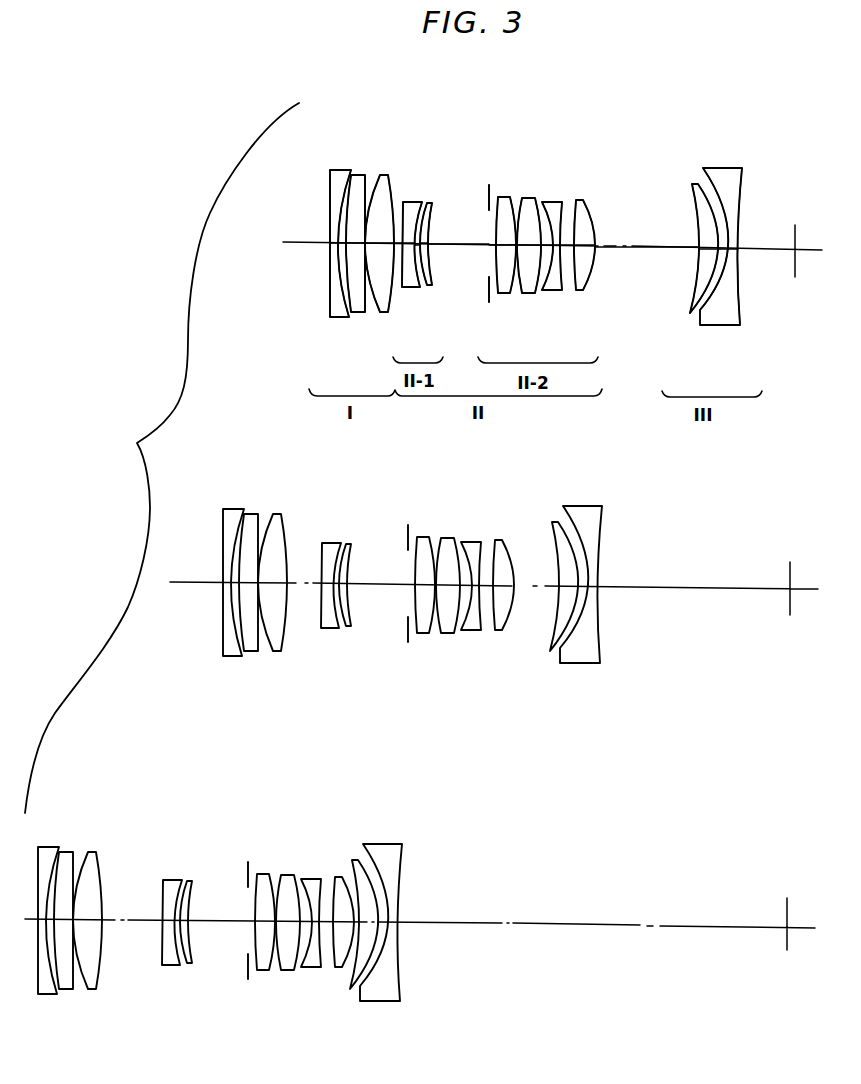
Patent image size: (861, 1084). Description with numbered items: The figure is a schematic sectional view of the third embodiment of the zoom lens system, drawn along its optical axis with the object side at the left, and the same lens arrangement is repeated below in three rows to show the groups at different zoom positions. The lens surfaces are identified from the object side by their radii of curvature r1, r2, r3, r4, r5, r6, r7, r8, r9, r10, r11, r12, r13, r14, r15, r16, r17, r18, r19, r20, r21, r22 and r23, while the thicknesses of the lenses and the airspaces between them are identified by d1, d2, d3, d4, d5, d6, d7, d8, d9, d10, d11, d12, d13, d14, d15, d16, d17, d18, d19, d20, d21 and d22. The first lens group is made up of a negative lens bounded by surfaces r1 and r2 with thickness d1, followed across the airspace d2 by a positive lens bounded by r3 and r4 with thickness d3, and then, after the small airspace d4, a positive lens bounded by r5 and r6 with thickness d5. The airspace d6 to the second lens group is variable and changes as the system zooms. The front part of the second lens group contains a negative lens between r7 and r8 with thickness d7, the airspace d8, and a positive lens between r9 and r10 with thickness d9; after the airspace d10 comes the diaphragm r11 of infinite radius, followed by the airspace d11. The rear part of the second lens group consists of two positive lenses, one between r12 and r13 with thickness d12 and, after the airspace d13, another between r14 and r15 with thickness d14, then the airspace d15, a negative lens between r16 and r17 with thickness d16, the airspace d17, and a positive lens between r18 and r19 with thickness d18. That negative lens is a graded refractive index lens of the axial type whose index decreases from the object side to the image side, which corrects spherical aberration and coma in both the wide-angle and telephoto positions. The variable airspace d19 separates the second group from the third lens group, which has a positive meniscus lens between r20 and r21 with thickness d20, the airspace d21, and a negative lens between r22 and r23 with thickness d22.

The lens surface radius of curvature r1 is at (333, 182).
The lens surface radius of curvature r2 is at (344, 186).
The lens surface radius of curvature r3 is at (351, 190).
The lens surface radius of curvature r4 is at (364, 178).
The lens surface radius of curvature r5 is at (378, 186).
The lens surface radius of curvature r6 is at (389, 178).
The lens surface radius of curvature r7 is at (404, 202).
The lens surface radius of curvature r8 is at (421, 203).
The lens surface radius of curvature r9 is at (428, 204).
The lens surface radius of curvature r10 is at (433, 205).
The diaphragm r11 is at (488, 196).
The lens surface radius of curvature r12 is at (498, 198).
The lens surface radius of curvature r13 is at (511, 198).
The lens surface radius of curvature r14 is at (523, 199).
The lens surface radius of curvature r15 is at (538, 199).
The lens surface radius of curvature r16 is at (547, 202).
The lens surface radius of curvature r17 is at (560, 202).
The lens surface radius of curvature r18 is at (576, 201).
The lens surface radius of curvature r19 is at (592, 201).
The lens surface radius of curvature r20 is at (693, 196).
The lens surface radius of curvature r21 is at (693, 182).
The lens surface radius of curvature r22 is at (711, 189).
The lens surface radius of curvature r23 is at (744, 178).
The lens thickness d1 is at (335, 250).
The airspace d2 is at (340, 234).
The lens thickness d3 is at (353, 250).
The airspace d4 is at (360, 238).
The lens thickness d5 is at (378, 305).
The variable airspace d6 is at (397, 300).
The lens thickness d7 is at (410, 283).
The airspace d8 is at (418, 236).
The lens thickness d9 is at (430, 285).
The airspace d10 is at (445, 252).
The airspace d11 is at (494, 252).
The lens thickness d12 is at (505, 293).
The airspace d13 is at (516, 240).
The lens thickness d14 is at (527, 294).
The airspace d15 is at (547, 238).
The lens thickness d16 is at (548, 291).
The airspace d17 is at (568, 291).
The lens thickness d18 is at (585, 255).
The variable airspace d19 is at (665, 252).
The lens thickness d20 is at (708, 247).
The airspace d21 is at (726, 244).
The lens thickness d22 is at (733, 253).